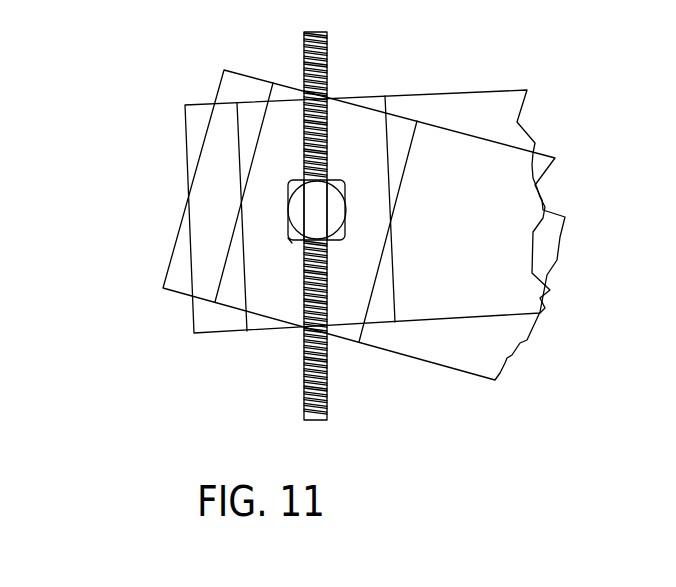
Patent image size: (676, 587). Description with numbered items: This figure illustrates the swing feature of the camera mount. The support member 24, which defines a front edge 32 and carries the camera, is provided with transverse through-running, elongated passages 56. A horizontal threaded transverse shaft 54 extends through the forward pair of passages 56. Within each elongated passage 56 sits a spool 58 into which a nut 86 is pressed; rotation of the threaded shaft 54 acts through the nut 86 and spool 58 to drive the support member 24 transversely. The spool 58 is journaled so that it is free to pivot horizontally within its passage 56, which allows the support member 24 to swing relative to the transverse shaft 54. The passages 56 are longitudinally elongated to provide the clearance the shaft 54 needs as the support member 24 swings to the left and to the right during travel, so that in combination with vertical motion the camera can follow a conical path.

The support member 24 is at (510, 97).
The front edge 32 is at (187, 177).
The transverse shaft 54 is at (328, 73).
The elongated passage 56 is at (402, 137).
The spool 58 is at (345, 215).
The nut 86 is at (287, 243).